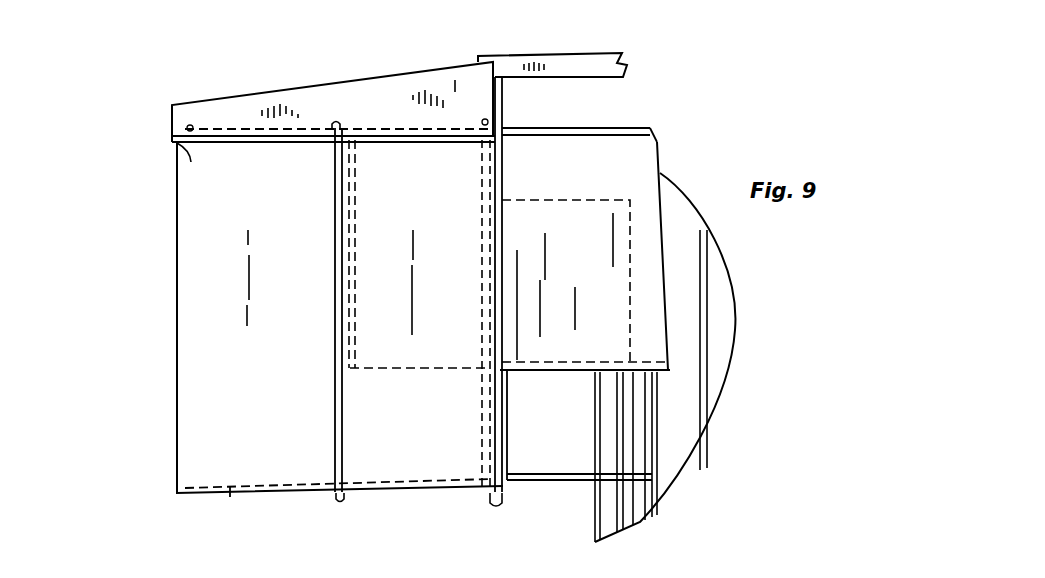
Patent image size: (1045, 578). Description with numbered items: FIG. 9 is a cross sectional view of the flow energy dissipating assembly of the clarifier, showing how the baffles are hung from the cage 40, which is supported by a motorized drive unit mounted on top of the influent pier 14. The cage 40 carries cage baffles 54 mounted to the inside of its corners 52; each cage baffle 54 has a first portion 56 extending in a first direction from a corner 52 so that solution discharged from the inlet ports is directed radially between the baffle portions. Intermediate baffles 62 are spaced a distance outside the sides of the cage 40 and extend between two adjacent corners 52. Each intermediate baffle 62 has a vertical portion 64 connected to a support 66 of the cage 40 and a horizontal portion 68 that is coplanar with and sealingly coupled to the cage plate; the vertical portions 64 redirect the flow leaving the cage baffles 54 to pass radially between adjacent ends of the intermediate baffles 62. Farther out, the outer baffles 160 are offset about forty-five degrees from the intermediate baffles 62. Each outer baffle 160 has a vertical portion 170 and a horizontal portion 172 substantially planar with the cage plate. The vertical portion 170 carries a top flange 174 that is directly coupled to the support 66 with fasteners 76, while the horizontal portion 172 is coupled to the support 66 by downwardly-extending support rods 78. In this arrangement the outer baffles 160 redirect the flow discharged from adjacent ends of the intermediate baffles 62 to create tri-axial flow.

The influent pier 14 is at (713, 293).
The cage 40 is at (603, 70).
The corners 52 is at (488, 501).
The cage baffles 54 is at (530, 215).
The first portion 56 is at (589, 213).
The intermediate baffles 62 is at (360, 185).
The vertical portions 64 is at (352, 231).
The supports 66 is at (352, 81).
The horizontal portions 68 is at (378, 372).
The fasteners 76 is at (190, 152).
The support rods 78 is at (334, 371).
The outer baffles 160 is at (200, 334).
The vertical portions 170 is at (188, 239).
The horizontal portions 172 is at (222, 500).
The top flanges 174 is at (175, 143).